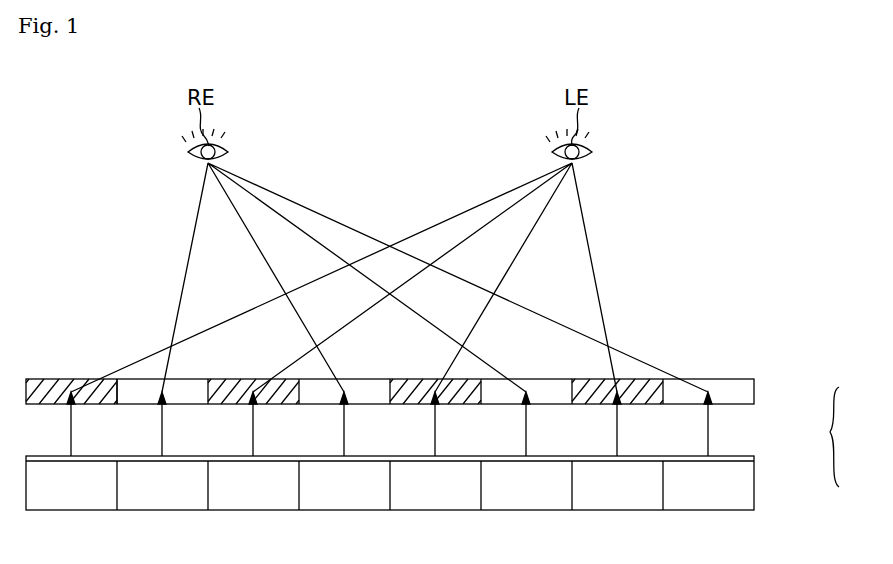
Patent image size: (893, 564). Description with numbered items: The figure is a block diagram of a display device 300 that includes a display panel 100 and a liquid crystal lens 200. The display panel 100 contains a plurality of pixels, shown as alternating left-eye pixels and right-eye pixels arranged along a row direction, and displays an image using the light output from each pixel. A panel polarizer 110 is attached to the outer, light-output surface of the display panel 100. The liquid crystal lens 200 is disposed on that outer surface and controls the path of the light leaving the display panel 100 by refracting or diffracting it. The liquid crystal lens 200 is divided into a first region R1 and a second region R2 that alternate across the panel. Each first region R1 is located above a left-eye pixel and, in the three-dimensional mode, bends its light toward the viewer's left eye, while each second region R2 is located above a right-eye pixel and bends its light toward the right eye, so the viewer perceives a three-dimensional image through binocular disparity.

The display panel 100 is at (432, 503).
The panel polarizer 110 is at (586, 462).
The liquid crystal lens 200 is at (432, 353).
The display device 300 is at (855, 437).
The first region R1 is at (68, 384).
The second region R2 is at (137, 386).